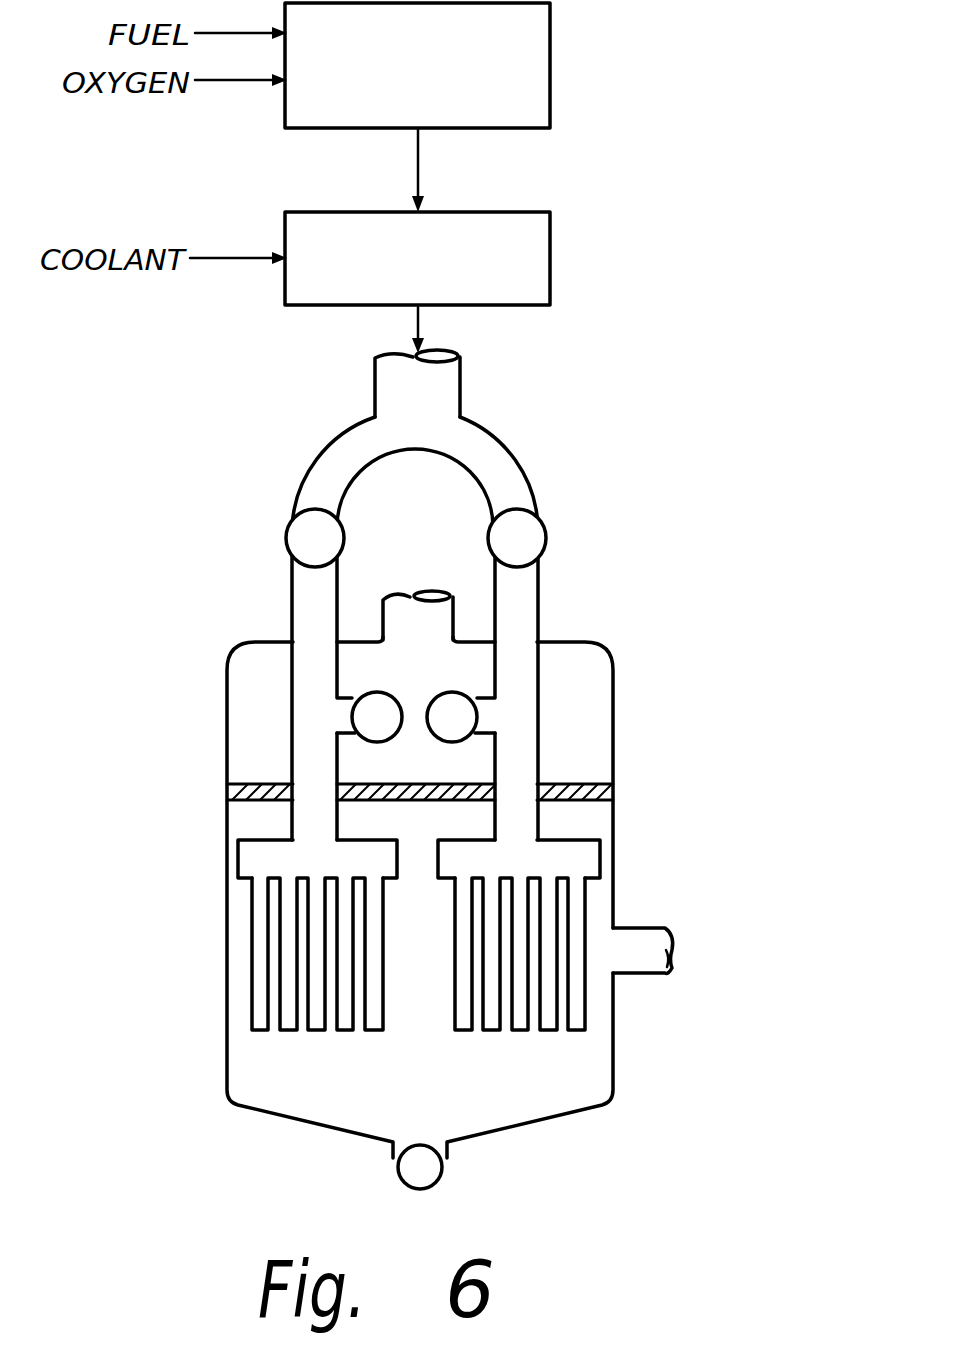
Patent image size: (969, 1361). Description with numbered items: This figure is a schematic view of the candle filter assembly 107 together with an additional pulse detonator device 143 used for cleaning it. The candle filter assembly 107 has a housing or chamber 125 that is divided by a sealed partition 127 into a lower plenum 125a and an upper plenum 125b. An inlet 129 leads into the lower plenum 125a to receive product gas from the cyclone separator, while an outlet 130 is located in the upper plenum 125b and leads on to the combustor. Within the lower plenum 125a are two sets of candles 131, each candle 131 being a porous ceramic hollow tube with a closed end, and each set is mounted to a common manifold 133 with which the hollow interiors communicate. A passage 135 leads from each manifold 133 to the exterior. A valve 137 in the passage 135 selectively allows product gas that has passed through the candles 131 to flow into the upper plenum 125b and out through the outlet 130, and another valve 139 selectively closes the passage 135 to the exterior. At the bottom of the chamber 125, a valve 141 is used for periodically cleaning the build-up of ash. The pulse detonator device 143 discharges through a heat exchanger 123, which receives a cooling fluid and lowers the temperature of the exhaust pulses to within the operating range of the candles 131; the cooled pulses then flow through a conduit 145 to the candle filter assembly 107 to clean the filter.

The candle filter assembly 107 is at (648, 722).
The heat exchanger 123 is at (545, 279).
The chamber 125 is at (227, 1015).
The plenum 125a is at (377, 1068).
The upper plenum 125b is at (248, 745).
The sealed partition 127 is at (245, 780).
The inlet 129 is at (641, 933).
The outlet 130 is at (408, 600).
The candles 131 is at (257, 932).
The manifold 133 is at (238, 860).
The passage 135 is at (300, 617).
The valve 137 is at (380, 692).
The valve 139 is at (286, 538).
The valve 141 is at (398, 1172).
The pulse detonator device 143 is at (540, 113).
The conduit 145 is at (452, 386).